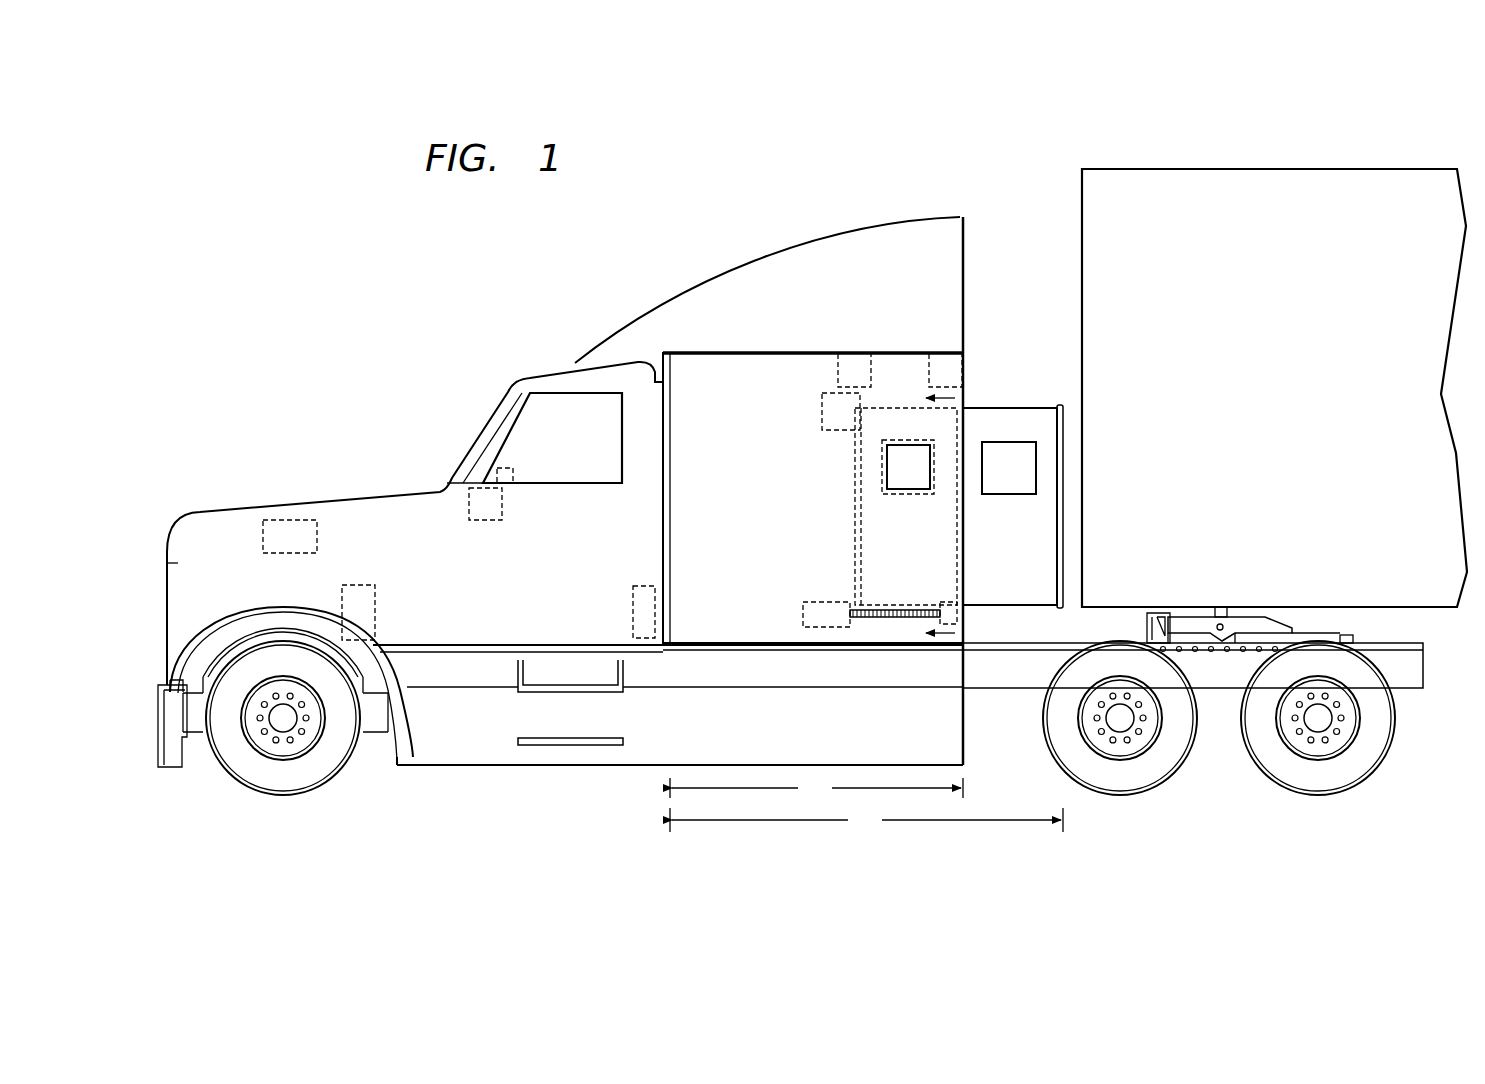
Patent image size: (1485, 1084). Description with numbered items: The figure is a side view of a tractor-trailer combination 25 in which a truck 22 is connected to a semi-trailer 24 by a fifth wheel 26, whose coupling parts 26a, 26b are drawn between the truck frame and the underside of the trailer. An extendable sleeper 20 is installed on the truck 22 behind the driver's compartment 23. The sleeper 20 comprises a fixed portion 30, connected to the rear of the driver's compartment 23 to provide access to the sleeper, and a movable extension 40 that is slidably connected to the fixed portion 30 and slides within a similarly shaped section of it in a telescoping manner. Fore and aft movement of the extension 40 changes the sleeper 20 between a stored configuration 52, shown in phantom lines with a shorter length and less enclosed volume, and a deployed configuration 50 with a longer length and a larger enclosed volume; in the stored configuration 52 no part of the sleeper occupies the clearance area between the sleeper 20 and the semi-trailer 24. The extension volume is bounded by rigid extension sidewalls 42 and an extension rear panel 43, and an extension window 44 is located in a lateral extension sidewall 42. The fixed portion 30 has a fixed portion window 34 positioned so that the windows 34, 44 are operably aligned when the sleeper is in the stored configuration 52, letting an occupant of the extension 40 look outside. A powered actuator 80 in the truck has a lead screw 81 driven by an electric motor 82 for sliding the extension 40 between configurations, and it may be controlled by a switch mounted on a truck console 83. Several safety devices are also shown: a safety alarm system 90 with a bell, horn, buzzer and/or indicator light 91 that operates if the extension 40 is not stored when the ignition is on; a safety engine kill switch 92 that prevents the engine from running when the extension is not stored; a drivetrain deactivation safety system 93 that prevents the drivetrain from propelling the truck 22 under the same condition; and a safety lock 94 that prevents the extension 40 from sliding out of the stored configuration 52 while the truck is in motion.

The extendable sleeper 20 is at (711, 507).
The truck 22 is at (541, 284).
The driver's compartment 23 is at (577, 431).
The semi-trailer 24 is at (1255, 395).
The tractor-trailer combination 25 is at (1000, 146).
The fifth wheel 26 is at (1247, 601).
The fifth wheel locking block 26a is at (1180, 618).
The kingpin 26b is at (1218, 615).
The fixed portion 30 is at (747, 347).
The fixed portion window 34 is at (921, 478).
The movable extension 40 is at (1001, 407).
The extension sidewalls 42 is at (1023, 557).
The extension rear panel 43 is at (1060, 405).
The extension window 44 is at (1023, 478).
The deployed configuration 50 is at (1016, 358).
The stored configuration 52 is at (836, 490).
The powered actuator 80 is at (789, 605).
The lead screw 81 is at (906, 609).
The electric motor 82 is at (826, 600).
The truck console 83 is at (504, 505).
The safety alarm system 90 is at (855, 352).
The indicator light 91 is at (517, 471).
The safety engine kill switch 92 is at (262, 538).
The drivetrain deactivation safety system 93 is at (376, 612).
The safety lock 94 is at (822, 410).